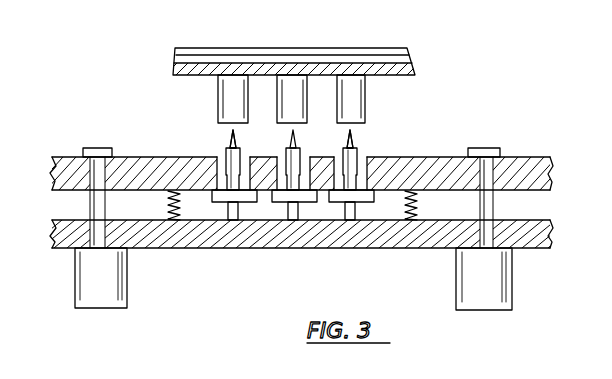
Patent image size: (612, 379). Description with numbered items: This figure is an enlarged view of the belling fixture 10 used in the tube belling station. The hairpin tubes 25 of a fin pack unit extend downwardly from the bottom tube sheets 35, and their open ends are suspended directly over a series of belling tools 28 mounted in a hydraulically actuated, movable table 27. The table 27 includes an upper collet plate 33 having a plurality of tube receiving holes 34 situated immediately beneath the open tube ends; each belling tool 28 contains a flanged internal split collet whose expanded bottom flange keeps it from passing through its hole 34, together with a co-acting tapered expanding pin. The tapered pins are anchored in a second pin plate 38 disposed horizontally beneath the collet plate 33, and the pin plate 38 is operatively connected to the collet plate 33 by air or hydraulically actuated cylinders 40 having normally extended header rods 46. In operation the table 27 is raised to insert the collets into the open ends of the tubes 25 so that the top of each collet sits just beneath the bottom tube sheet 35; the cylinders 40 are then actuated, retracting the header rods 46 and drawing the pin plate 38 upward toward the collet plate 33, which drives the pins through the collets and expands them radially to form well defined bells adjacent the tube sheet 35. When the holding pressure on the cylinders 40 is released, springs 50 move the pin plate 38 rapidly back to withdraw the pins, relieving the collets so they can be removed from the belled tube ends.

The test probe fixture assembly 10 is at (446, 68).
The hairpin tubes 25 is at (366, 103).
The hydraulically actuated table 27 is at (514, 128).
The belling tools 28 is at (220, 131).
The upper collet plate 33 is at (537, 158).
The tube receiving holes 34 is at (213, 157).
The bottom tube sheets 35 is at (413, 63).
The pin plate 38 is at (552, 241).
The cylinders 40 is at (127, 296).
The header rods 46 is at (92, 203).
The springs 50 is at (180, 205).